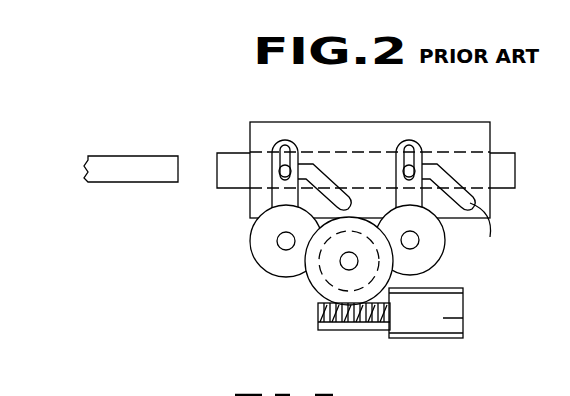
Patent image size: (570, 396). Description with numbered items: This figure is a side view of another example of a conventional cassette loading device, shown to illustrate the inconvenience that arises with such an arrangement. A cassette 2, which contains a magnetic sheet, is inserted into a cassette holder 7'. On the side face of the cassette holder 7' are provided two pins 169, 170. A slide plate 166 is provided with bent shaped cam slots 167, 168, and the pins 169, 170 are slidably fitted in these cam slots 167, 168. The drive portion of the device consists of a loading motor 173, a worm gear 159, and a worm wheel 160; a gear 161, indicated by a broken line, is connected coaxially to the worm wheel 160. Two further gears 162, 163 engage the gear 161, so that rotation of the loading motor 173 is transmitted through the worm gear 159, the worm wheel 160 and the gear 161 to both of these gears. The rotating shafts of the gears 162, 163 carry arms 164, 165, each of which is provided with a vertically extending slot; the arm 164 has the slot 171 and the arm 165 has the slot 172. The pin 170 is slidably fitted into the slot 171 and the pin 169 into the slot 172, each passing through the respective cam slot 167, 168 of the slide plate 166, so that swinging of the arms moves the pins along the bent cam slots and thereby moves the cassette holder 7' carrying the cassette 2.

The cassette 2 is at (163, 157).
The cassette holder 7' is at (504, 145).
The worm gear 159 is at (333, 330).
The worm wheel 160 is at (326, 271).
The gear 161 is at (316, 270).
The gear 162 is at (440, 247).
The gear 163 is at (268, 250).
The arm 164 is at (424, 151).
The arm 165 is at (258, 160).
The slide plate 166 is at (367, 151).
The cam slot 167 is at (494, 229).
The cam slot 168 is at (317, 168).
The pin 169 is at (282, 170).
The pin 170 is at (417, 162).
The slot 171 is at (409, 152).
The slot 172 is at (287, 150).
The loading motor 173 is at (440, 338).